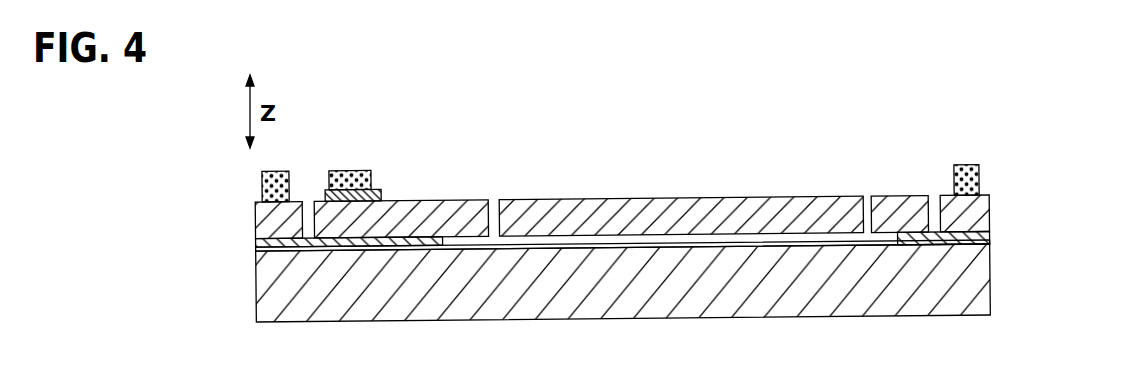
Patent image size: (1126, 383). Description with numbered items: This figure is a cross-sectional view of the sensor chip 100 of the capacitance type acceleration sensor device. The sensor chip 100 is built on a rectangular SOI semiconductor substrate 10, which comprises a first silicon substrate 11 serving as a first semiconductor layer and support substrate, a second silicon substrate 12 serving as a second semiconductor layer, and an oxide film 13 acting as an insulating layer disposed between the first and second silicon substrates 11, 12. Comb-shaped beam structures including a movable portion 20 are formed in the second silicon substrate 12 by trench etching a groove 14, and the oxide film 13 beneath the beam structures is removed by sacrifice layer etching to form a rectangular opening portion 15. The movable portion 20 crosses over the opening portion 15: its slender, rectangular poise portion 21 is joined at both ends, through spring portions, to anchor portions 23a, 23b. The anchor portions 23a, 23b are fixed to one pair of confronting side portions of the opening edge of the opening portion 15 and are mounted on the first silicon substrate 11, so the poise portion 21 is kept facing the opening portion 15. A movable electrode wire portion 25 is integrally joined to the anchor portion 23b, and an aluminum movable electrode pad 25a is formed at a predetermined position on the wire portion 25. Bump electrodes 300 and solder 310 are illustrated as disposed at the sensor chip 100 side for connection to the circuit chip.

The sensor chip 100 is at (962, 128).
The semiconductor substrate 10 is at (1058, 203).
The first silicon substrate 11 is at (982, 265).
The second silicon substrate 12 is at (982, 220).
The oxide film 13 is at (983, 239).
The groove 14 is at (934, 198).
The opening portion 15 is at (900, 237).
The movable portion 20 is at (712, 197).
The poise portion 21 is at (653, 197).
The anchor portion 23a is at (901, 196).
The anchor portion 23b is at (452, 198).
The movable electrode wire portion 25 is at (397, 198).
The movable electrode pad 25a is at (317, 188).
The bump electrode 300 is at (355, 170).
The solder 310 is at (263, 177).